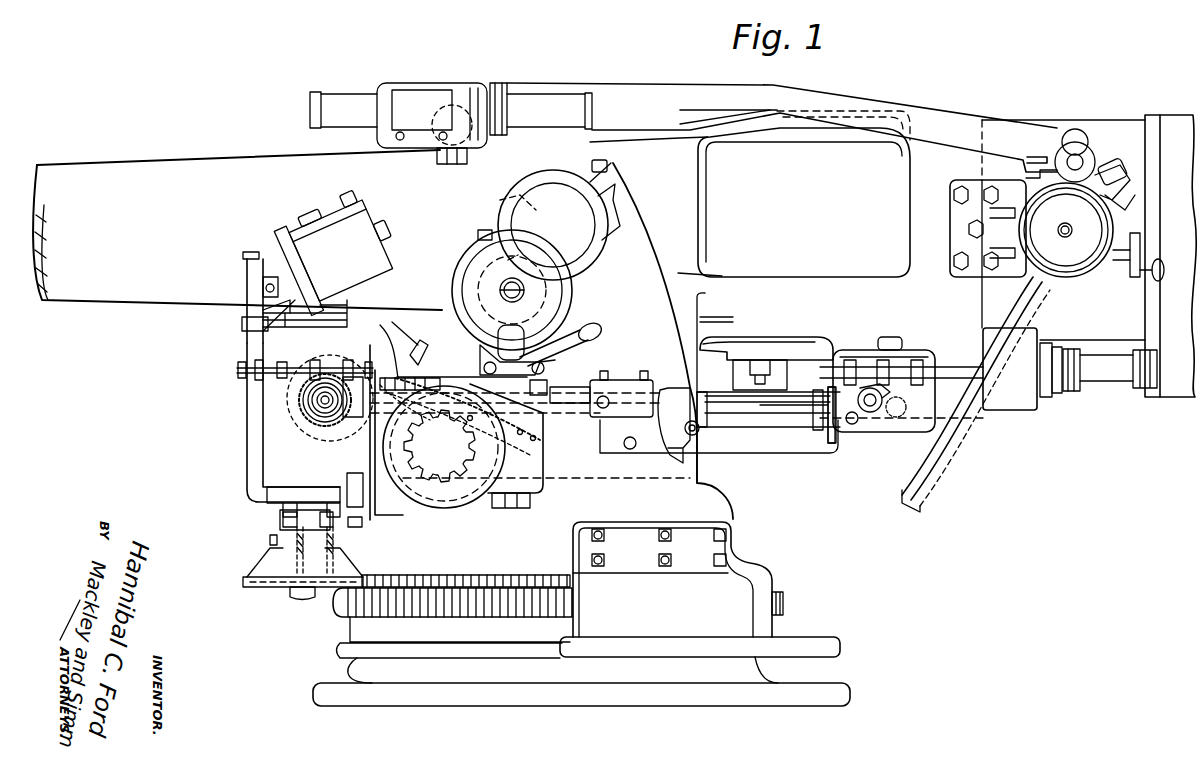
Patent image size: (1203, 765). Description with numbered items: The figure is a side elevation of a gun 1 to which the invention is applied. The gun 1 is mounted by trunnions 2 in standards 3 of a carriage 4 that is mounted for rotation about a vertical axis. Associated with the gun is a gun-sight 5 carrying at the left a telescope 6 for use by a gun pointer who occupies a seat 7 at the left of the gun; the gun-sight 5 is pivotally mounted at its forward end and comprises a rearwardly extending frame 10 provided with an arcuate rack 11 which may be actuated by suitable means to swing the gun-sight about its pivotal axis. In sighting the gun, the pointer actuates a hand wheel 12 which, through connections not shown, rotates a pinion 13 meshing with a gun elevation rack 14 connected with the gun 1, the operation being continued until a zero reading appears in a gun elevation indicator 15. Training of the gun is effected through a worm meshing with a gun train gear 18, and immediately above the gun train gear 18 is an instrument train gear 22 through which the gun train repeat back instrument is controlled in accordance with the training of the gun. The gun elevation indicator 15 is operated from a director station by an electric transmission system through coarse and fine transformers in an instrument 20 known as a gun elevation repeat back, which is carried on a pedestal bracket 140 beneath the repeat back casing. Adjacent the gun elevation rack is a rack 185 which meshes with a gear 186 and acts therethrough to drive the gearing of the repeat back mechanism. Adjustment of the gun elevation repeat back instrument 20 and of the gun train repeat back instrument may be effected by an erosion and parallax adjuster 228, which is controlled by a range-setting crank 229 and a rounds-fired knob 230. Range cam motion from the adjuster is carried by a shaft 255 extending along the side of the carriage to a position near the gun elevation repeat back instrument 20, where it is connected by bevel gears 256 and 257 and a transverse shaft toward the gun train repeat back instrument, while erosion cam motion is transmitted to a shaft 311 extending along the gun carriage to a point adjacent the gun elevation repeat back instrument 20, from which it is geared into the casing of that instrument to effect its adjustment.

The gun 1 is at (192, 163).
The trunnions 2 is at (543, 225).
The standards 3 is at (636, 228).
The carriage 4 is at (700, 472).
The gun-sight 5 is at (496, 92).
The telescope 6 is at (338, 105).
The seat 7 is at (777, 345).
The rearwardly extending frame 10 is at (992, 136).
The arcuate rack 11 is at (978, 435).
The hand wheel 12 is at (568, 293).
The pinion 13 is at (447, 460).
The gun elevation rack 14 is at (532, 440).
The gun elevation indicator 15 is at (316, 242).
The gun train gear 18 is at (336, 606).
The gun elevation repeat back instrument 20 is at (259, 465).
The instrument train gear 22 is at (432, 575).
The pedestal bracket 140 is at (333, 572).
The rack 185 is at (470, 440).
The gear 186 is at (318, 433).
The erosion and parallax adjuster 228 is at (875, 448).
The range-setting crank 229 is at (866, 372).
The rounds-fired knob 230 is at (850, 418).
The shaft 255 is at (735, 402).
The bevel gear 256 is at (410, 378).
The bevel gear 257 is at (398, 380).
The shaft 311 is at (770, 410).